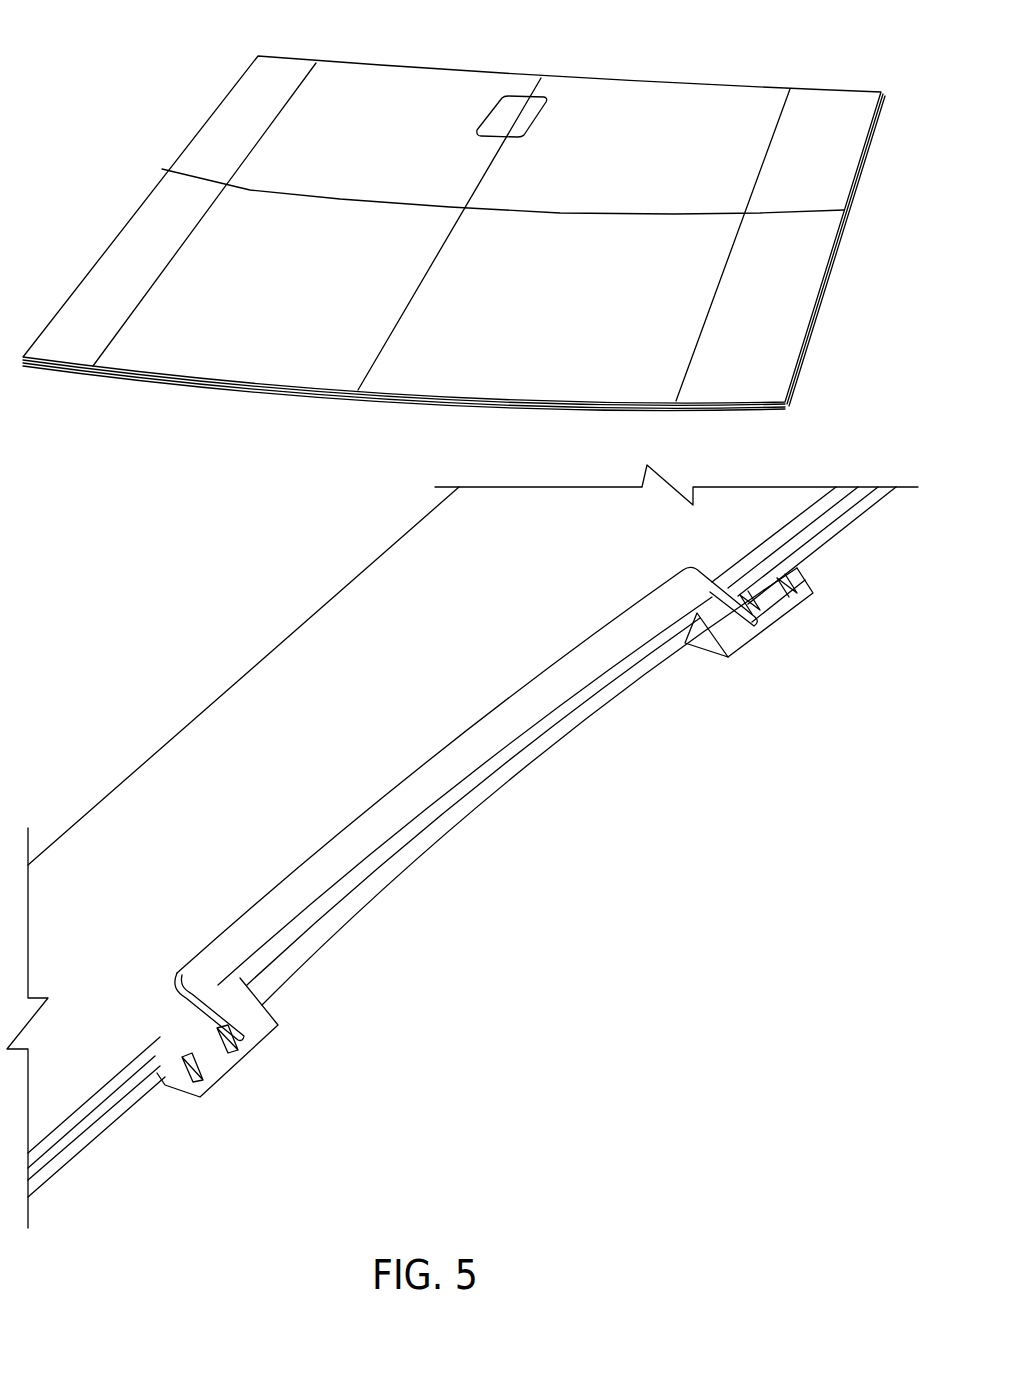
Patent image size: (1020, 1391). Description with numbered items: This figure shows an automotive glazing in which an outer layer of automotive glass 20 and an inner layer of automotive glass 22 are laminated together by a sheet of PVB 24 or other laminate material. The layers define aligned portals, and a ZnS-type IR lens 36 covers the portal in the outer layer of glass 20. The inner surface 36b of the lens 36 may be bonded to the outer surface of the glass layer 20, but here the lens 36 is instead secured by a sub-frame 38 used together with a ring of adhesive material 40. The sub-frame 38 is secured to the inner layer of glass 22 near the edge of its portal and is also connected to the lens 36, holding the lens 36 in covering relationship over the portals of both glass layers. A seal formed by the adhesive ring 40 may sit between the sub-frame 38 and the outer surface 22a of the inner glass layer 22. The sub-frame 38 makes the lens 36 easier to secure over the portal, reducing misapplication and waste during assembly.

The outer layer of automotive glass 20 is at (188, 336).
The IR lens 36 is at (510, 106).
The inner surface of second transparency 36b is at (173, 990).
The inner layer of automotive glass 22 is at (55, 1170).
The outer surface of first transparency 22a is at (140, 1100).
The sheet of PVB 24 is at (107, 1107).
The sub-frame 38 is at (736, 657).
The ring of adhesive material 40 is at (784, 602).